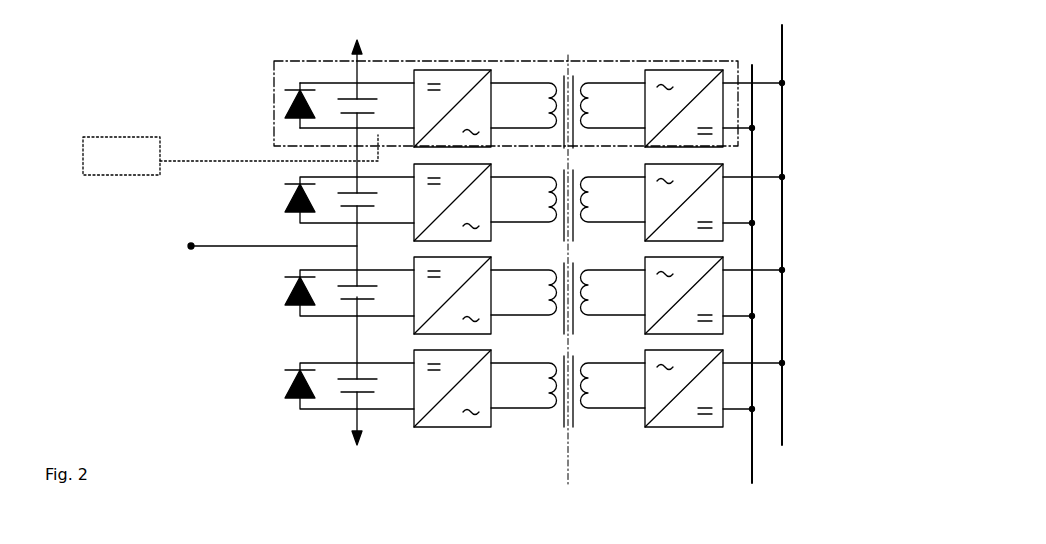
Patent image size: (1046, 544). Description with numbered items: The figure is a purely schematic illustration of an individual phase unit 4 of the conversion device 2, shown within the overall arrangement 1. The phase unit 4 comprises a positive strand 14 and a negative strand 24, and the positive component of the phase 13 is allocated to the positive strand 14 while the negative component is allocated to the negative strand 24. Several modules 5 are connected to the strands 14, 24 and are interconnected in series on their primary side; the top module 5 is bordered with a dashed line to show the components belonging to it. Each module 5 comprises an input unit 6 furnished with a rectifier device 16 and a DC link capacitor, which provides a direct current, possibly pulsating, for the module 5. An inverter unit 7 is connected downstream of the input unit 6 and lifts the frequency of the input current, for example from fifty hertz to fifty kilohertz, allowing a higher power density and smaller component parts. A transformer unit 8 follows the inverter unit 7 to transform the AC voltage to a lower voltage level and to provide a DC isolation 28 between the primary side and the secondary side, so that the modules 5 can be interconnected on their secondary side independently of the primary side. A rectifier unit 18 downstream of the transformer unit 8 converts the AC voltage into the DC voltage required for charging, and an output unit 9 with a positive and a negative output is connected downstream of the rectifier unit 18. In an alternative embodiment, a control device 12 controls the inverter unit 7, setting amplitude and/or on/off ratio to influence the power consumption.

The energy storage system 1 is at (104, 43).
The conversion device 2 is at (132, 371).
The phase unit 4 is at (136, 108).
The module 5 is at (294, 91).
The input unit 6 is at (290, 76).
The inverter unit 7 is at (457, 69).
The transformer unit 8 is at (568, 80).
The output unit 9 is at (733, 79).
The control device 12 is at (113, 172).
The phase 13 is at (205, 244).
The positive strand 14 is at (361, 44).
The rectifier device 16 is at (282, 110).
The rectifier unit 18 is at (690, 69).
The negative strand 24 is at (356, 426).
The DC isolation 28 is at (574, 78).